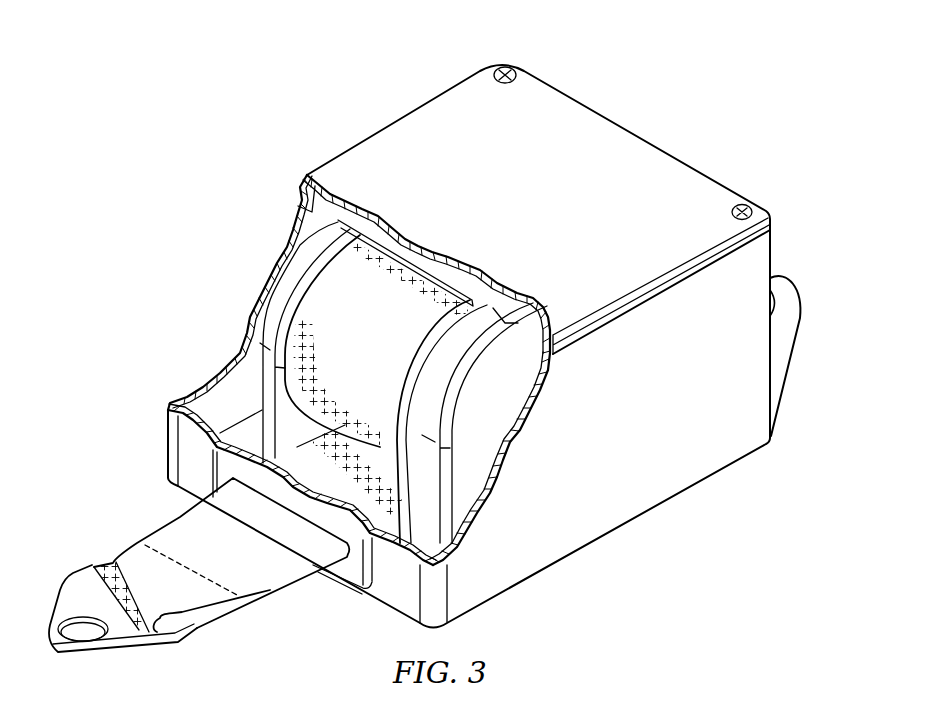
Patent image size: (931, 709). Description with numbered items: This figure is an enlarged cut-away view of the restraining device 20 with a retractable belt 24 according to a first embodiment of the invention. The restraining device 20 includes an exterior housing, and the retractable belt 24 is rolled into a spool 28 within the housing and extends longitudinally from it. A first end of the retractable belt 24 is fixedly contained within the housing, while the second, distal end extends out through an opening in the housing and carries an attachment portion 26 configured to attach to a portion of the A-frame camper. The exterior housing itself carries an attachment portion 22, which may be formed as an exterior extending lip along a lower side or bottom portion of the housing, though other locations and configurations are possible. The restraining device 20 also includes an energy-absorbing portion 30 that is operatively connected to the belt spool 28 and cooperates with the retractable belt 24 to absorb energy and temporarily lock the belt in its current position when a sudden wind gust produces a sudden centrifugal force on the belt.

The restraining device 20 is at (329, 60).
The attachment portion 22 is at (782, 287).
The retractable belt 24 is at (181, 534).
The attachment portion 26 is at (72, 603).
The spool 28 is at (310, 293).
The energy-absorbing portion 30 is at (497, 412).